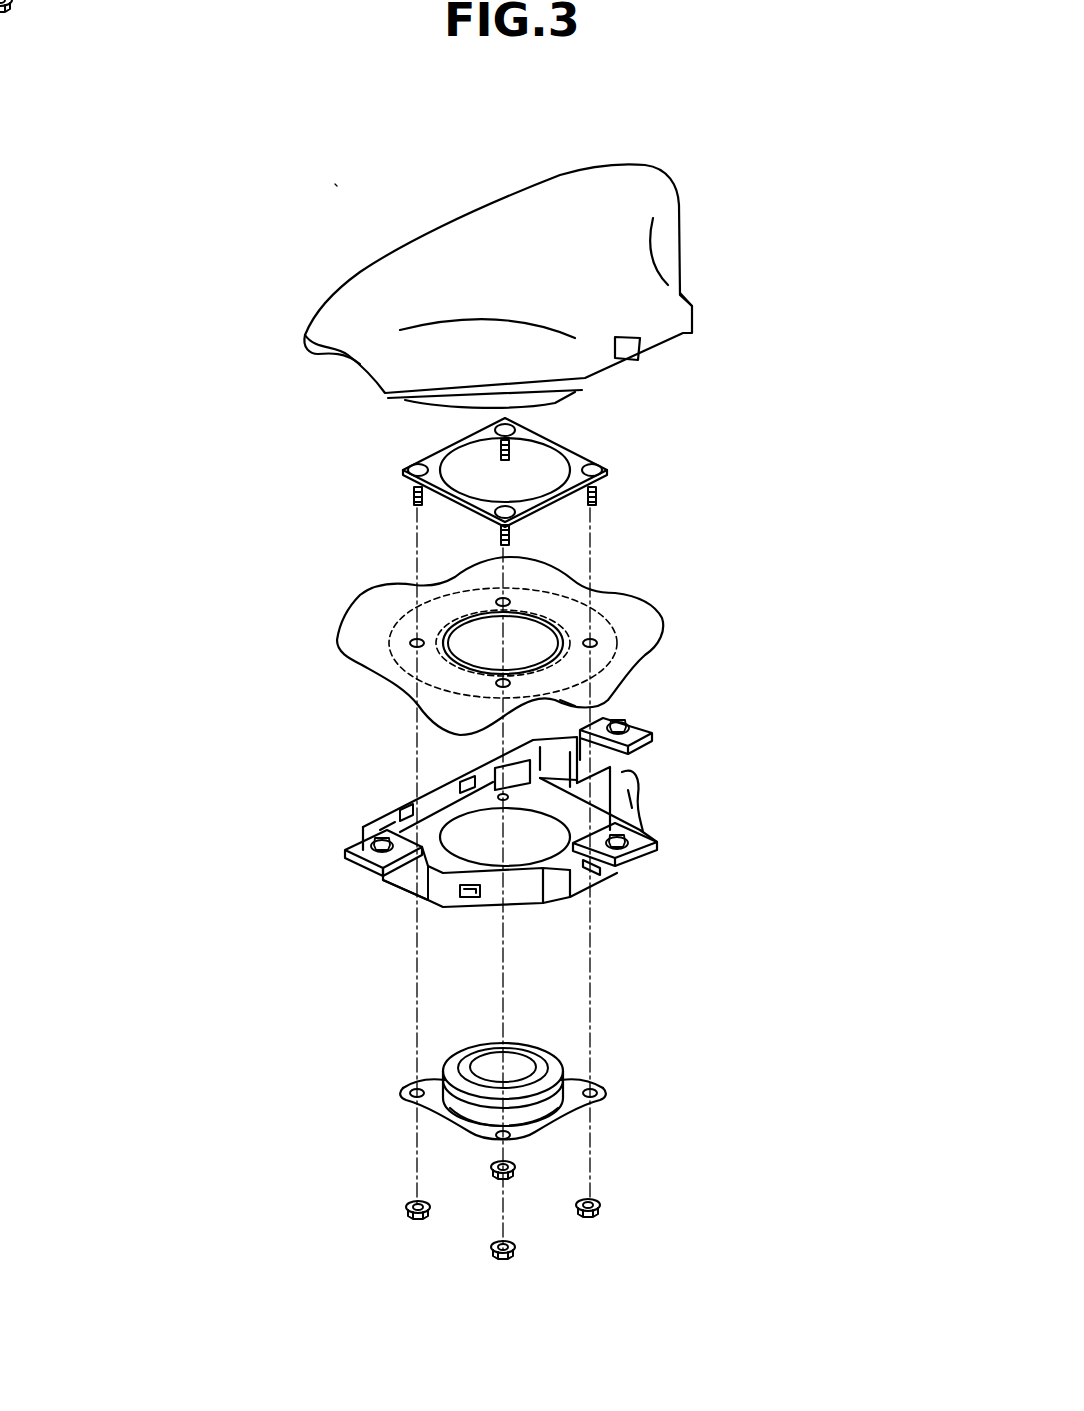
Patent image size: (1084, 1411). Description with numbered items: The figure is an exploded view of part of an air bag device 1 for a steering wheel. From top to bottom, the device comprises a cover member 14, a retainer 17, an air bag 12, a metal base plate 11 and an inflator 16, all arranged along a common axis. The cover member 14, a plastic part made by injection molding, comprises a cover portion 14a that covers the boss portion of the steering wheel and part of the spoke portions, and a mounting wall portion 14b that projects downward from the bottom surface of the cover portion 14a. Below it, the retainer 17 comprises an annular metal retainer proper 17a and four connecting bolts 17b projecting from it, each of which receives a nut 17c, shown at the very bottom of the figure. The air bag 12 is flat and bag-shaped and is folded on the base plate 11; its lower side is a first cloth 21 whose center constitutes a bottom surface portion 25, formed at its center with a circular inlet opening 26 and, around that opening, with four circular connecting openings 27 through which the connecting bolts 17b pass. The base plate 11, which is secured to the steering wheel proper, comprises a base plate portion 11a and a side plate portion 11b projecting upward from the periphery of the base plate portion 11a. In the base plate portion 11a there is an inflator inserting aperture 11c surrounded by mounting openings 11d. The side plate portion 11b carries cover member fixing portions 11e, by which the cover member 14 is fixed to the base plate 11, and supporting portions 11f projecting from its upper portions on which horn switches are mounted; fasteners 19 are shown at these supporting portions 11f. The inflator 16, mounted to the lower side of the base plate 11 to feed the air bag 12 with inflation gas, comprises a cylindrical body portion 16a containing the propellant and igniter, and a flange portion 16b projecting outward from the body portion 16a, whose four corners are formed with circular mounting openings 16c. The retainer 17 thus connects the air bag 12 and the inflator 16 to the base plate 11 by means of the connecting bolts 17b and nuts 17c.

The air bag device 1 is at (337, 186).
The cover member 14 is at (683, 207).
The cover portion 14a is at (465, 237).
The mounting wall portion 14b is at (643, 348).
The retainer 17 is at (587, 453).
The retainer proper 17a is at (430, 467).
The connecting bolts 17b is at (508, 450).
The connecting openings 27 is at (502, 600).
The air bag 12 is at (663, 598).
The first cloth 21 is at (640, 628).
The bottom surface portion 25 is at (560, 660).
The inlet opening 26 is at (577, 658).
The base plate 11 is at (645, 787).
The base plate portion 11a is at (437, 822).
The side plate portion 11b is at (405, 878).
The inflator inserting aperture 11c is at (437, 795).
The mounting openings 11d is at (395, 822).
The cover member fixing portions 11e is at (470, 897).
The supporting portions 11f is at (643, 742).
The bolt 19 is at (640, 725).
The inflator 16 is at (570, 1060).
The body portion 16a is at (530, 1045).
The flange portion 16b is at (570, 1108).
The mounting openings 16c is at (417, 1093).
The nuts 17c is at (510, 1178).